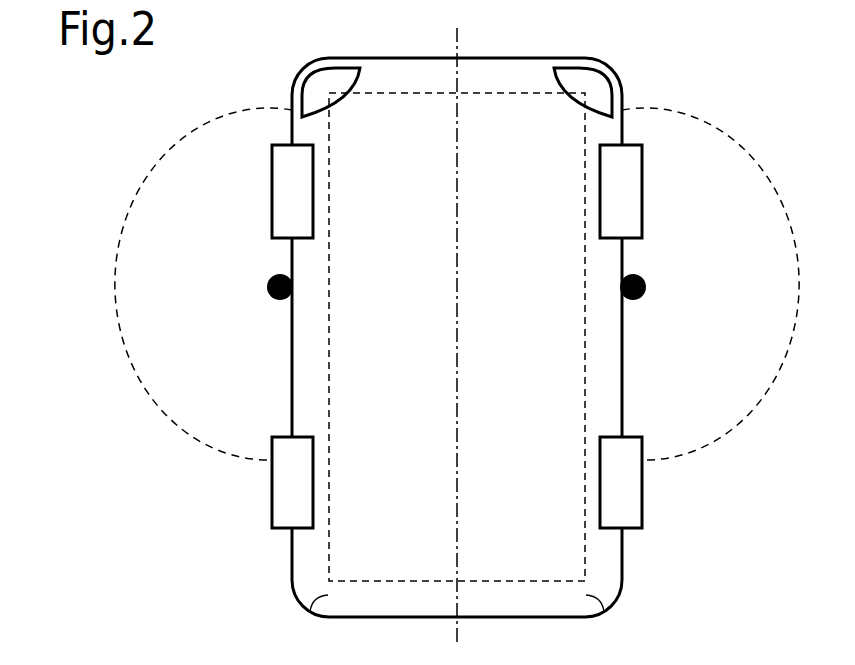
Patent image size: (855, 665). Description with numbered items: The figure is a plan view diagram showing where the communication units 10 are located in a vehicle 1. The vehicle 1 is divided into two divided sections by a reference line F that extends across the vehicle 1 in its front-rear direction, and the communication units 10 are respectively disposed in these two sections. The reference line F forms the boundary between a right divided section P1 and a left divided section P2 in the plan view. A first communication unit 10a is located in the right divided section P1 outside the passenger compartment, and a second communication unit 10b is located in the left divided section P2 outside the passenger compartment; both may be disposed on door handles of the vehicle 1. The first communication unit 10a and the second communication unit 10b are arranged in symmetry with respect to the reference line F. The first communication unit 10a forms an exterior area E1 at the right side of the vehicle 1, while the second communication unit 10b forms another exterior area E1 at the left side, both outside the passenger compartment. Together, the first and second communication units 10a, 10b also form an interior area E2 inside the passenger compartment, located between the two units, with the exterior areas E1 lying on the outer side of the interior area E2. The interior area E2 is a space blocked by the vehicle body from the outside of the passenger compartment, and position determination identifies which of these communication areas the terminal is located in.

The vehicle 1 is at (620, 87).
The communication units 10 is at (460, 272).
The first communication unit 10a is at (645, 289).
The second communication unit 10b is at (268, 283).
The exterior area E1 is at (175, 158).
The interior area E2 is at (393, 93).
The reference line F is at (457, 40).
The right divided section P1 is at (601, 604).
The left divided section P2 is at (313, 604).